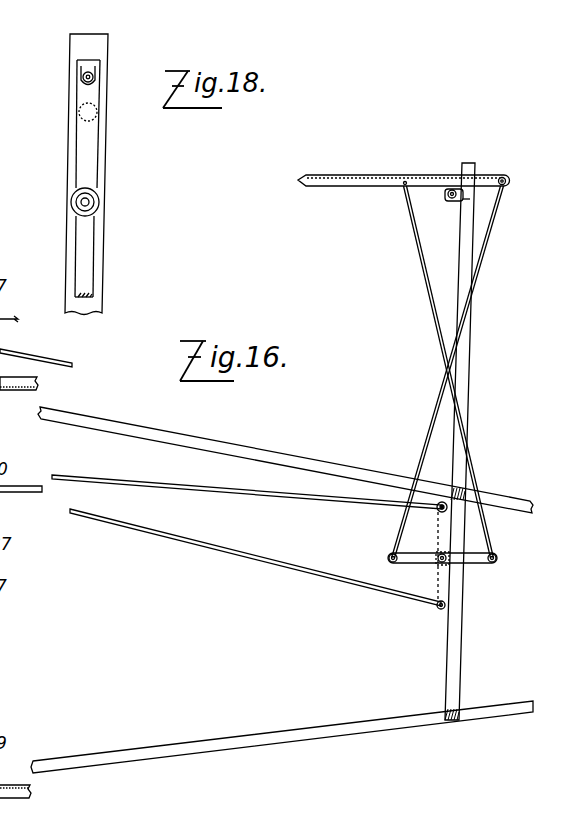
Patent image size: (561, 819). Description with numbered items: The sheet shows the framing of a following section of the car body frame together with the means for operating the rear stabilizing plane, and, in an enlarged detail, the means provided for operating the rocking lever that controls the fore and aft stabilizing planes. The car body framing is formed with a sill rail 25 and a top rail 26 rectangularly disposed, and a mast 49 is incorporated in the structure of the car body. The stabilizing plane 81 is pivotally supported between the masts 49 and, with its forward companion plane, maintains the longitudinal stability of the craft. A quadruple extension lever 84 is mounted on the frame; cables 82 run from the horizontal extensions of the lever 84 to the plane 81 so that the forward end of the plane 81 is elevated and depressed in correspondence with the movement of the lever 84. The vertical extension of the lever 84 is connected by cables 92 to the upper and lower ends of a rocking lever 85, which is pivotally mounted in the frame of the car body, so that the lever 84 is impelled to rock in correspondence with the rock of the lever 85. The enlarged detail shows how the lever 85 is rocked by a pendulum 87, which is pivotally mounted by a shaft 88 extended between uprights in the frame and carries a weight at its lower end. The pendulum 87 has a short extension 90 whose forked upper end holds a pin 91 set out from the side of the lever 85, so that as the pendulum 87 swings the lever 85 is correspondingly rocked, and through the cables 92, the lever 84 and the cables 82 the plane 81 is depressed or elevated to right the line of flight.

In FIG. 16, the sill rails 25 is at (229, 752).
In FIG. 16, the top rails 26 is at (197, 446).
In FIG. 16, the mast 49 is at (461, 356).
In FIG. 16, the stabilizing plane 81 is at (383, 177).
In FIG. 16, the cables 82 is at (423, 264).
In FIG. 16, the lever 84 is at (440, 575).
In FIG. 16, the cables 92 is at (20, 355).
In FIG. 18, the rocking lever 85 is at (104, 48).
In FIG. 18, the pendulum 87 is at (82, 268).
In FIG. 18, the shaft 88 is at (100, 200).
In FIG. 18, the extension 90 is at (93, 157).
In FIG. 18, the pin 91 is at (81, 77).